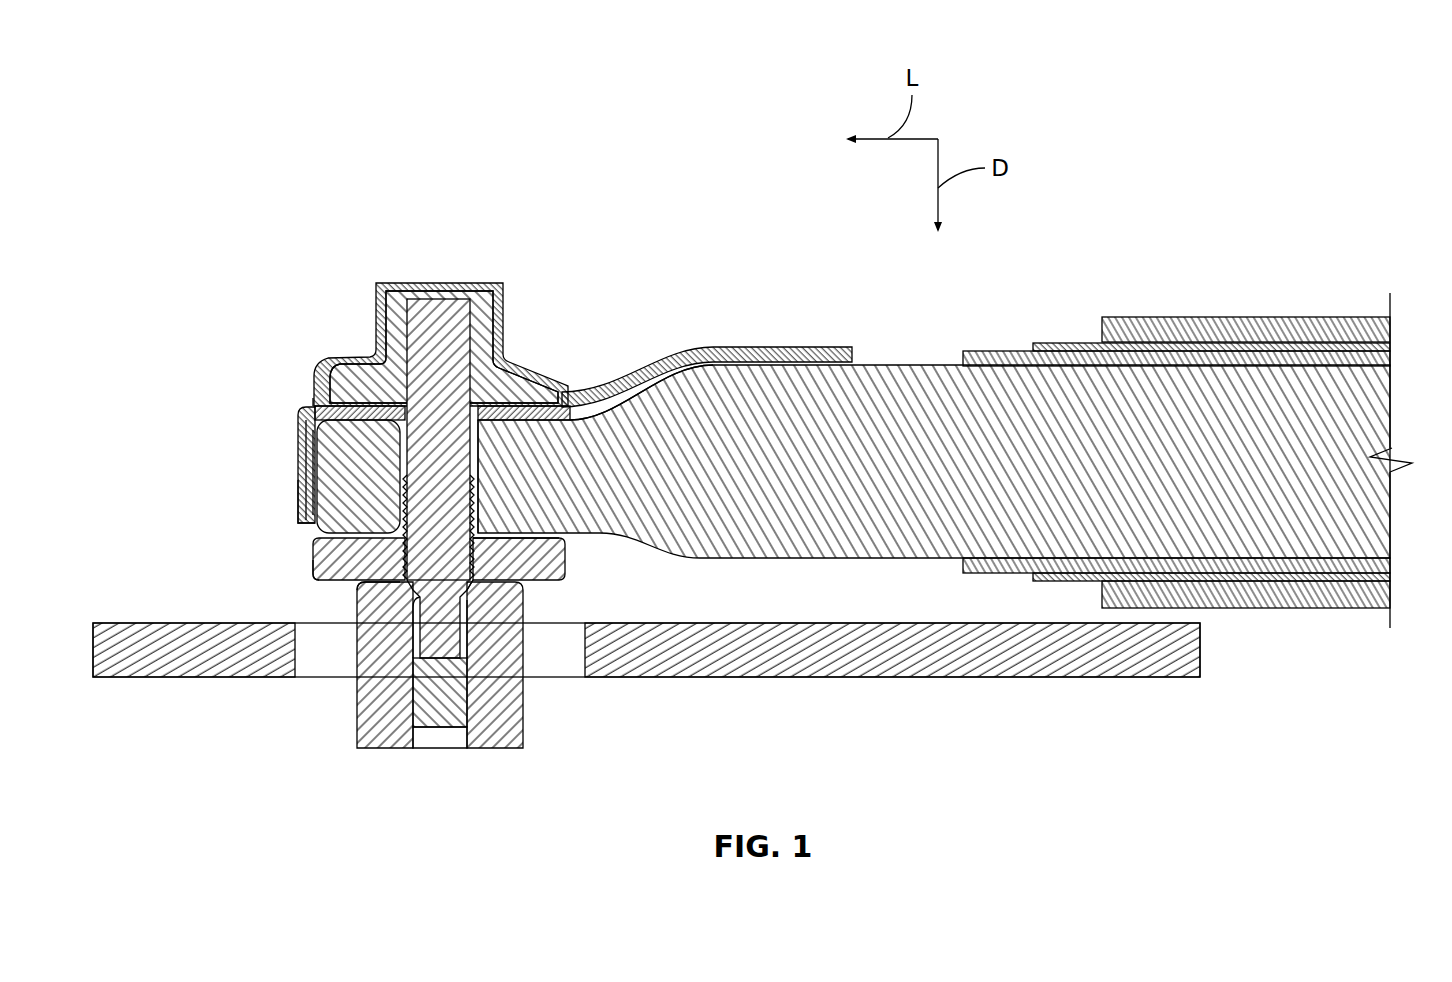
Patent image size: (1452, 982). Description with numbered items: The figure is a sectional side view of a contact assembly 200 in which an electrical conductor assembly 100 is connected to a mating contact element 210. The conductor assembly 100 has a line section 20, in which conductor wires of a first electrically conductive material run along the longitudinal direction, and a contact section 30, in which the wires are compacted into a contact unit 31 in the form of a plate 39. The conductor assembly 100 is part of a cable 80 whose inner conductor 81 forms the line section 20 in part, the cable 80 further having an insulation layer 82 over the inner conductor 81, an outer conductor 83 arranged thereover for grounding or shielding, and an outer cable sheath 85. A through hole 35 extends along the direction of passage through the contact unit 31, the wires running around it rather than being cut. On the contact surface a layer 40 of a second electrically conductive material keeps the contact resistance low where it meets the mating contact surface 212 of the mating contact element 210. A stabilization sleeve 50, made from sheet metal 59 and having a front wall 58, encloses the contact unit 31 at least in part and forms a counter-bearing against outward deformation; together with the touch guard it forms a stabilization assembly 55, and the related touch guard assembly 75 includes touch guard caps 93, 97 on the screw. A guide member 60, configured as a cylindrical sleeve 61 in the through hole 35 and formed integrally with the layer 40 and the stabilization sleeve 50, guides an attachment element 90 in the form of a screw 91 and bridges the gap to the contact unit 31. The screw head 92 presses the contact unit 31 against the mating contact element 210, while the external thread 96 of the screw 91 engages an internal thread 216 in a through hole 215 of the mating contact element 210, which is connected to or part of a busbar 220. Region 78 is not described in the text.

The fastening system 200 is at (236, 196).
The electrical conductor assembly 100 is at (428, 208).
The contact section 30 is at (275, 321).
The line section 20 is at (1100, 288).
The screw head 92 is at (446, 308).
The touch guard cap 93 is at (383, 308).
The attachment element 90 is at (455, 328).
The through hole 35 is at (505, 405).
The contact unit 31 is at (560, 437).
The touch guard assembly 75 is at (712, 347).
The outer cable sheath 85 is at (1152, 318).
The outer conductor 83 is at (1232, 344).
The insulation layer 82 is at (1298, 358).
The inner conductor 81 is at (1343, 383).
The cable 80 is at (1350, 483).
The plate 39 is at (317, 403).
The stabilization assembly 55 is at (330, 450).
The stabilization sleeve 50 is at (298, 463).
The front wall 58 is at (308, 470).
The sheet metal 59 is at (313, 478).
The housing bottom 78 is at (297, 495).
The layer 40 is at (317, 538).
The mating contact surface 212 is at (313, 578).
The screw 91 is at (362, 588).
The mating contact element 210 is at (373, 717).
The through hole 215 is at (437, 738).
The touch guard cap 97 is at (448, 717).
The internal thread 216 is at (472, 555).
The external thread 96 is at (473, 567).
The guide member 60 is at (480, 458).
The sleeve 61 is at (480, 485).
The busbar 220 is at (873, 665).